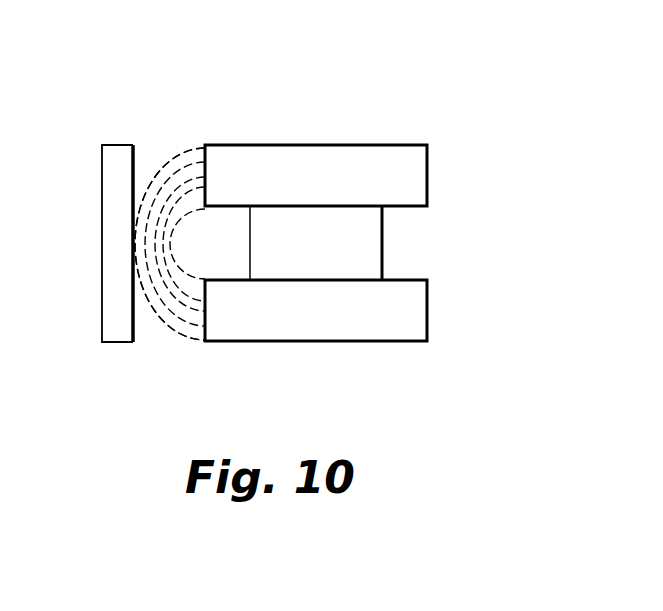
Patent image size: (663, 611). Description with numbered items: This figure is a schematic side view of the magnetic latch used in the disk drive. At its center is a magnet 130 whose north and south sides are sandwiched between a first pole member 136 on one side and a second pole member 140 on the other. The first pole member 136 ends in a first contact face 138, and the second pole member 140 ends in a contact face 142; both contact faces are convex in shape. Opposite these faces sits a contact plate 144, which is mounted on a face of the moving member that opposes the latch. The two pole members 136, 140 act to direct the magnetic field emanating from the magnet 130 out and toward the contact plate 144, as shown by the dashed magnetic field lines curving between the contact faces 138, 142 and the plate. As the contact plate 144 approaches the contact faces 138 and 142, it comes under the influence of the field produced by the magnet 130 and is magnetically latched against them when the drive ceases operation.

The magnet 130 is at (377, 239).
The first pole member 136 is at (420, 163).
The first contact face 138 is at (204, 158).
The second pole member 140 is at (420, 313).
The contact face 142 is at (203, 322).
The contact plate 144 is at (112, 323).